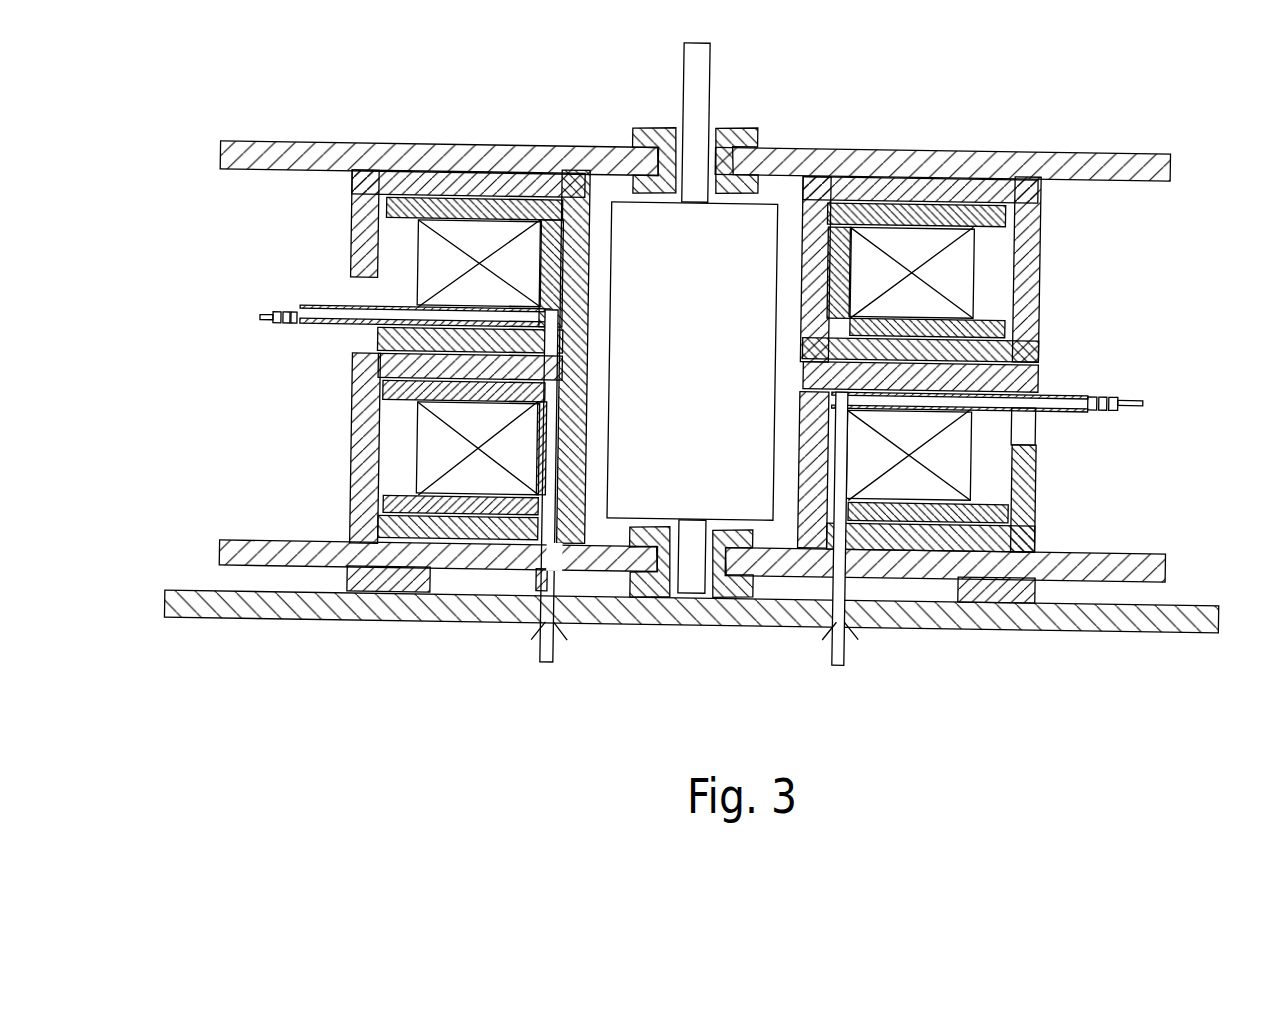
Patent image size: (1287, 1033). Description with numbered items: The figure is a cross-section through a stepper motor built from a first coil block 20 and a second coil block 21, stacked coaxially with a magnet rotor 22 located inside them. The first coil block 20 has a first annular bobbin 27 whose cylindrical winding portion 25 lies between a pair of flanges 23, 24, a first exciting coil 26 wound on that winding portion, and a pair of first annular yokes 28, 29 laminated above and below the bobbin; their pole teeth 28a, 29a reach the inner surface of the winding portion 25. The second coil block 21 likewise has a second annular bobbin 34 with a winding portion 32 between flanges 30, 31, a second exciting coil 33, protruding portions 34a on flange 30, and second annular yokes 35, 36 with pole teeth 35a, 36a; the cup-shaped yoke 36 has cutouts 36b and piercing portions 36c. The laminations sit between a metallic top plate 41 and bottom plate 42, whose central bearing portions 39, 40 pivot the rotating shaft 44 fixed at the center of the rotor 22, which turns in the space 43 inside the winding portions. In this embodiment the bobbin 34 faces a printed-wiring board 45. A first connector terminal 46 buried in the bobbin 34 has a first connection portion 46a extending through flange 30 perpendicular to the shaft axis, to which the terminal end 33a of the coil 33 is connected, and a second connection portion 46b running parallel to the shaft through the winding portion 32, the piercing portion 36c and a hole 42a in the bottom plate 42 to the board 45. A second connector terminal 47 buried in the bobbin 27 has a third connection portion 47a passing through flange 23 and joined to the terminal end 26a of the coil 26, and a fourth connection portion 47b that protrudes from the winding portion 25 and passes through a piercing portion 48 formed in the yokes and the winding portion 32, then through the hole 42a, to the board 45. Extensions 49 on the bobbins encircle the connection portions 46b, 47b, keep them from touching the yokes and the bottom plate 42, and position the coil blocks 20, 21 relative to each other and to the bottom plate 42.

The first coil block 20 is at (1155, 245).
The second coil block 21 is at (1173, 514).
The magnet rotor 22 is at (786, 196).
The flange 23 is at (422, 203).
The flange 24 is at (908, 322).
The winding portion 25 is at (549, 270).
The first exciting coil 26 is at (427, 237).
The terminal end of the exciting coil 26a is at (277, 323).
The first annular bobbin 27 is at (990, 262).
The first annular yoke 28 is at (482, 182).
The pole teeth 28a is at (813, 232).
The first annular yoke 29 is at (1035, 350).
The pole teeth 29a is at (822, 298).
The flange 30 is at (868, 436).
The flange 31 is at (430, 505).
The winding portion 32 is at (862, 473).
The second exciting coil 33 is at (428, 463).
The terminal end of the exciting coil 33a is at (1108, 396).
The second annular bobbin 34 is at (990, 474).
The protruding portions 34a is at (320, 328).
The second annular yoke 35 is at (1020, 380).
The pole teeth 35a is at (812, 398).
The second annular yoke 36 is at (360, 387).
The pole teeth 36a is at (573, 505).
The cutouts 36b is at (1030, 425).
The piercing portions 36c is at (948, 597).
The bearing portion 39 is at (742, 135).
The bearing portion 40 is at (725, 590).
The top plate 41 is at (908, 150).
The bottom plate 42 is at (1150, 570).
The holes 42a is at (585, 572).
The space 43 is at (601, 208).
The rotating shaft 44 is at (709, 60).
The printed-wiring board 45 is at (1097, 625).
The first connector terminal 46 is at (1167, 407).
The first connection portion 46a is at (803, 417).
The second connection portion 46b is at (835, 583).
The second connector terminal 47 is at (247, 318).
The third connection portion 47a is at (398, 318).
The fourth connection portion 47b is at (545, 458).
The piercing portion 48 is at (553, 337).
The extensions 49 is at (418, 402).